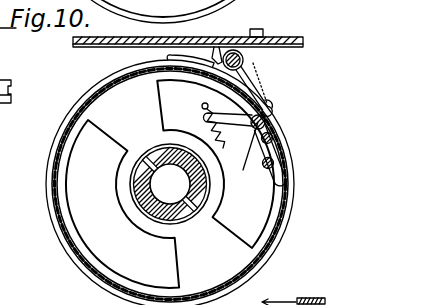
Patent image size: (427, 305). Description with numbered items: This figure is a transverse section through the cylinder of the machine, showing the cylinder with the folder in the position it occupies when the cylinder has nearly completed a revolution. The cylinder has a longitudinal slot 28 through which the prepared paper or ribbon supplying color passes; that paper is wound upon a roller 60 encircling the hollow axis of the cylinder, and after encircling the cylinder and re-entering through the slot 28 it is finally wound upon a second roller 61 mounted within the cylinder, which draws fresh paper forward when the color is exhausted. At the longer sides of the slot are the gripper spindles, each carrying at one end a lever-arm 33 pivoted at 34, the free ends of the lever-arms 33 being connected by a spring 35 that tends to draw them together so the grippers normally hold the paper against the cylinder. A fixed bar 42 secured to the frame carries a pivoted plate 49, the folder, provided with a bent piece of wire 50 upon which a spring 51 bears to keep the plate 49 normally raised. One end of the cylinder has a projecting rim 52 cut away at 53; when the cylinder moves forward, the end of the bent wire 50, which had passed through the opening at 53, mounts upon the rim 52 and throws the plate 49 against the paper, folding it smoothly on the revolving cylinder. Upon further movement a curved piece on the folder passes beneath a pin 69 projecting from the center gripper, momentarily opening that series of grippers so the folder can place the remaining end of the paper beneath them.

The longitudinal slot 28 is at (266, 121).
The lever-arm 33 is at (228, 129).
The pivot 34 is at (252, 117).
The spring 35 is at (202, 125).
The fixed bar 42 is at (243, 61).
The plate 49 is at (256, 92).
The bent piece of wire 50 is at (216, 48).
The spring 51 is at (250, 29).
The projecting rim 52 is at (278, 252).
The cut-away 53 is at (152, 69).
The roller 60 is at (170, 184).
The second roller 61 is at (263, 163).
The pin 69 is at (272, 113).